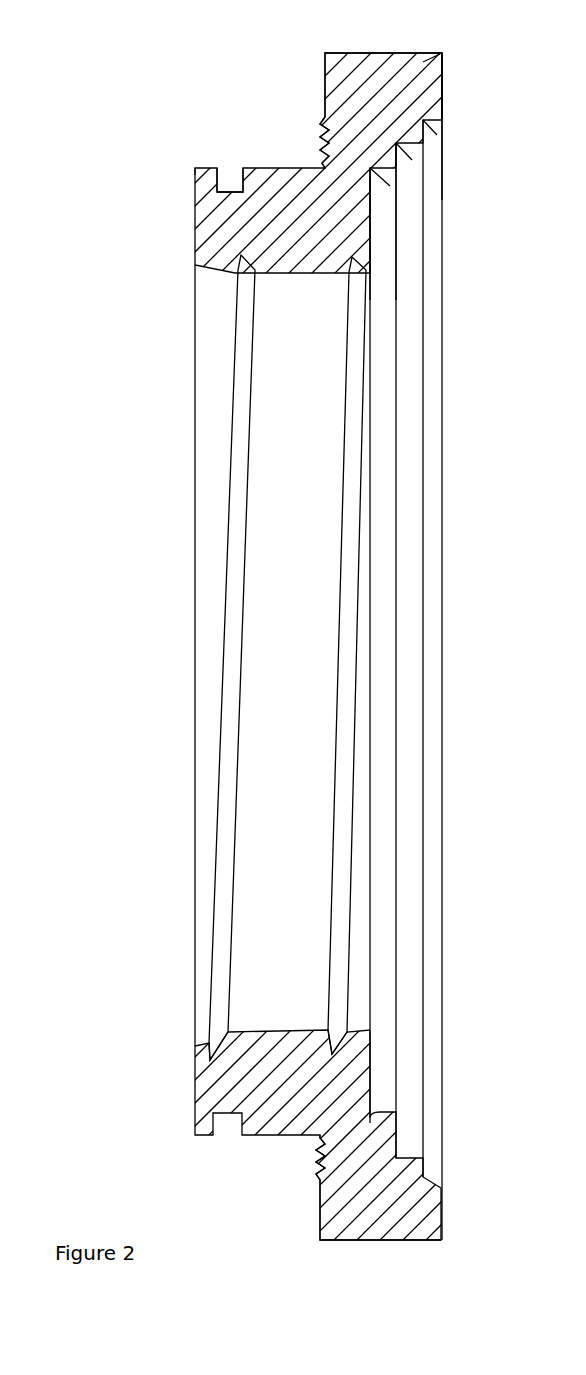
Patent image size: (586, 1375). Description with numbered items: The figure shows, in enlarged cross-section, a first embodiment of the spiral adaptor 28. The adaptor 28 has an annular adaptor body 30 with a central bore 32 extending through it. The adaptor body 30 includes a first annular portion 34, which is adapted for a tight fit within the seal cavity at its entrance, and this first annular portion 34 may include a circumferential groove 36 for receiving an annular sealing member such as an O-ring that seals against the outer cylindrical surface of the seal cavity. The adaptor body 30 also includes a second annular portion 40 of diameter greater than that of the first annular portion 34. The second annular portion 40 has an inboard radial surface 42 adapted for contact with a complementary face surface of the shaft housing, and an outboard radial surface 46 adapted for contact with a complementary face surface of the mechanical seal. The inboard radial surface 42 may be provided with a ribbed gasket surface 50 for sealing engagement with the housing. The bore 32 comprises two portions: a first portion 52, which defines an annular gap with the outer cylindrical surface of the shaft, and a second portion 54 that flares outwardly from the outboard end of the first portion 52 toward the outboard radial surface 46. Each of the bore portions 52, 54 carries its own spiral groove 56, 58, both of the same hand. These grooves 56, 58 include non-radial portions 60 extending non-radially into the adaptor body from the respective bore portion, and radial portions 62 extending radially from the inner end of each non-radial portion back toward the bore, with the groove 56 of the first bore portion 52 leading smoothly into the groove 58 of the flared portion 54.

The adaptor 28 is at (116, 223).
The annular adaptor body 30 is at (436, 82).
The central bore 32 is at (207, 347).
The first annular portion 34 is at (272, 168).
The circumferential groove 36 is at (232, 182).
The second annular portion 40 is at (442, 53).
The inboard radial surface 42 is at (323, 108).
The outboard radial surface 46 is at (442, 105).
The ribbed gasket surface 50 is at (318, 1162).
The first portion of the bore 52 is at (295, 1030).
The second portion of the bore 54 is at (390, 1110).
The spiral groove 56 is at (220, 997).
The spiral groove 58 is at (410, 1025).
The non-radial portions 60 is at (422, 154).
The radial portions 62 is at (371, 247).